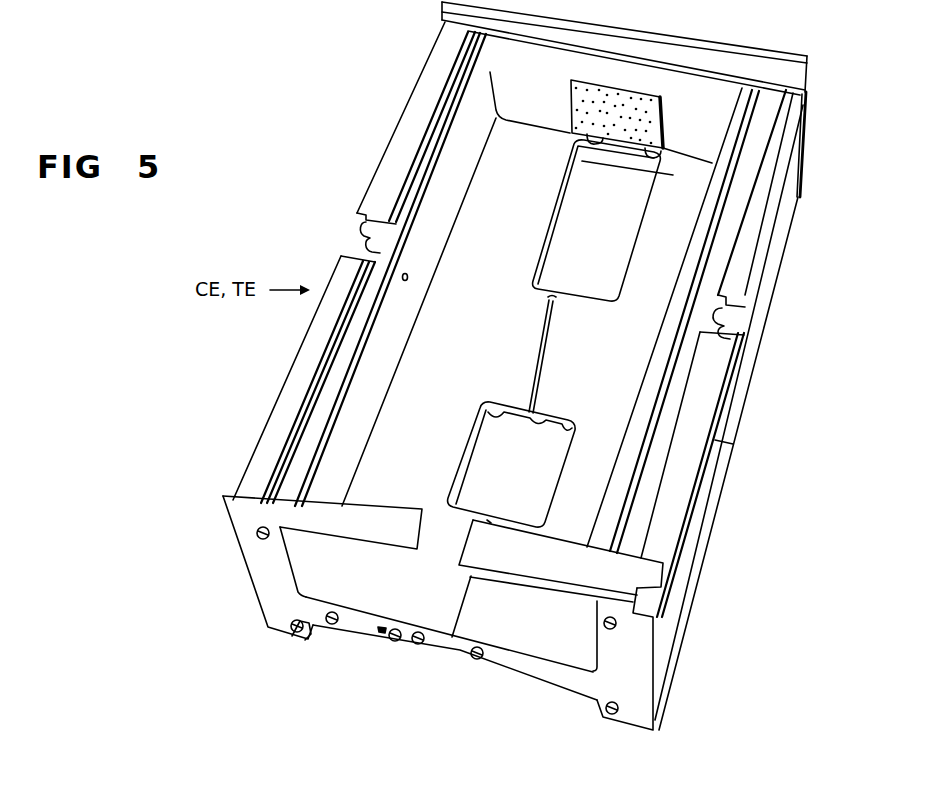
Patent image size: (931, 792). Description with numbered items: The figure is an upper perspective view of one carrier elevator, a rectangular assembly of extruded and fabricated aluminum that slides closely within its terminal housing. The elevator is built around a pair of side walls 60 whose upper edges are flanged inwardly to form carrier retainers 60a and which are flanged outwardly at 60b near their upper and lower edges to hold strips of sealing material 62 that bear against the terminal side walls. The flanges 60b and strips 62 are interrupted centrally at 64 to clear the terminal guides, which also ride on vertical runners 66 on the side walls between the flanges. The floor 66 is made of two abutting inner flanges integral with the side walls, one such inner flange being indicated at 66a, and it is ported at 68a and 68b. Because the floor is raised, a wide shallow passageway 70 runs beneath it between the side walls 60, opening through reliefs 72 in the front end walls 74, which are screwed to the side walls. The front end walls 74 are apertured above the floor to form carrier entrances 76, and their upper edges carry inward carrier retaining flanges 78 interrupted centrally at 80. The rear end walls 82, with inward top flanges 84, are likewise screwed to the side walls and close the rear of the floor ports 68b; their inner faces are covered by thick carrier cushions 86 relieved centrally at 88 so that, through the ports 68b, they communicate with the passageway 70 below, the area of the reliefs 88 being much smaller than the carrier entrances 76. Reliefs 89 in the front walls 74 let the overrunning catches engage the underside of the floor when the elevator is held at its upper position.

The side walls 60 is at (393, 349).
The carrier retainers 60a is at (437, 205).
The outward flanges 60b is at (385, 258).
The strips of sealing material 62 is at (400, 139).
The central interruption 64 is at (362, 241).
The floor 66 is at (633, 257).
The guide rail 66a is at (660, 350).
The floor port 68a is at (472, 430).
The floor port 68b is at (556, 297).
The passageway 70 is at (627, 233).
The reliefs 72 is at (568, 690).
The front end walls 74 is at (258, 577).
The carrier entrances 76 is at (518, 670).
The carrier retaining flanges 78 is at (373, 502).
The central interruption 80 is at (432, 548).
The rear end walls 82 is at (637, 170).
The inward top flanges 84 is at (677, 43).
The carrier cushions 86 is at (527, 118).
The reliefs 88 is at (667, 107).
The reliefs 89 is at (362, 628).